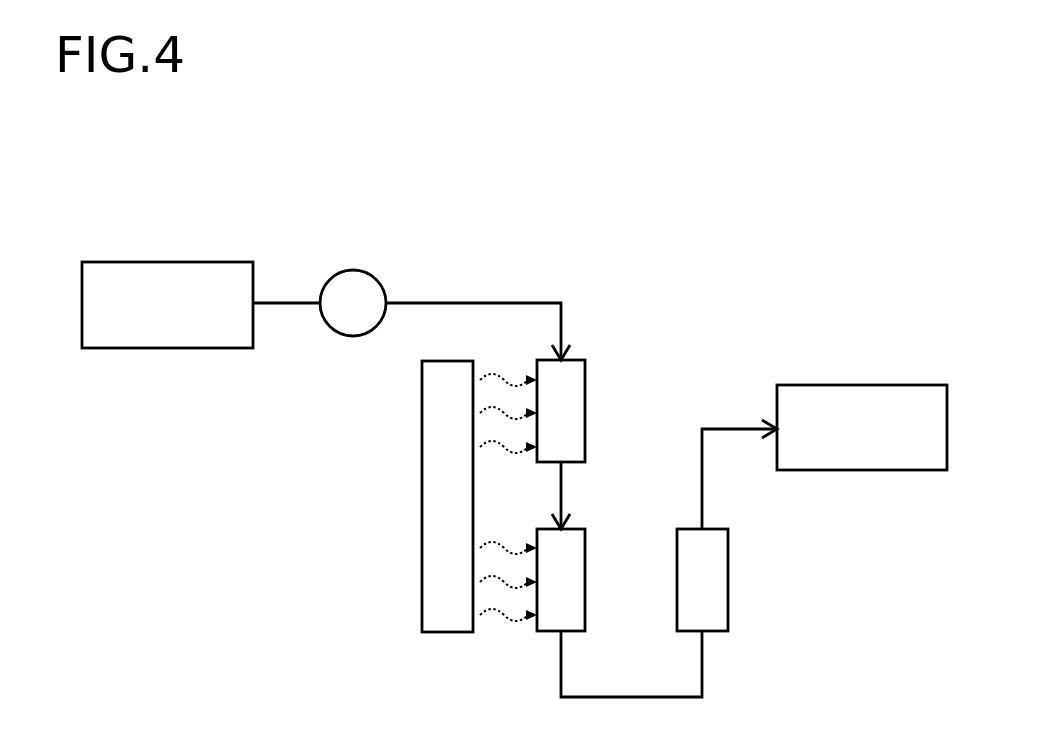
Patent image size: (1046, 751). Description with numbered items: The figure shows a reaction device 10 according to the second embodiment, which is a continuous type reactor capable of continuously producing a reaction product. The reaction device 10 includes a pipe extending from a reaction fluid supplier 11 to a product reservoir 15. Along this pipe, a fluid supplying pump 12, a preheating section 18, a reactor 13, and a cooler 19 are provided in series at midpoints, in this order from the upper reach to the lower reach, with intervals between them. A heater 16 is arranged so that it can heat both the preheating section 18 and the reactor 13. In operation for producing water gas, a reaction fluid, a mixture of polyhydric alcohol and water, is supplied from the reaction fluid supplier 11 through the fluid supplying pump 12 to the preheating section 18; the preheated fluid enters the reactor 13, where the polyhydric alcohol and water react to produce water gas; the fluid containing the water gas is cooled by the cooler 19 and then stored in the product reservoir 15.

The reaction device 10 is at (690, 248).
The reaction fluid supplier 11 is at (163, 340).
The fluid supplying pump 12 is at (353, 270).
The reactor 13 is at (575, 580).
The product reservoir 15 is at (866, 455).
The heater 16 is at (432, 477).
The preheating section 18 is at (575, 400).
The cooler 19 is at (716, 578).